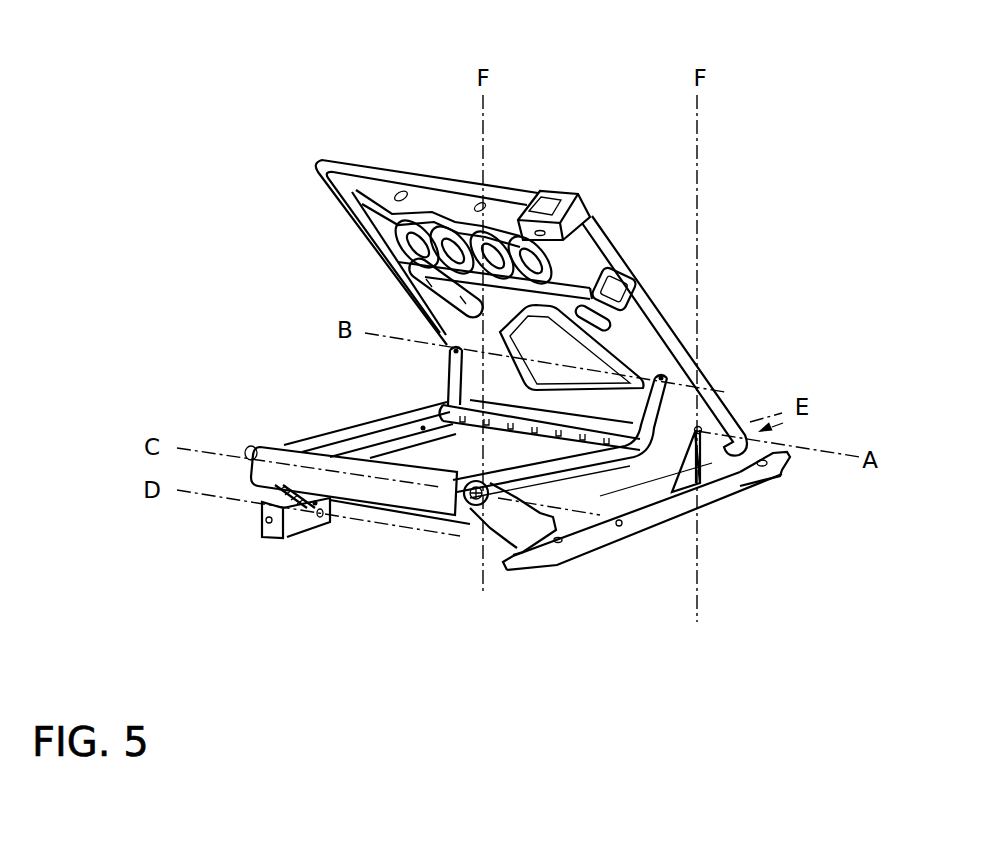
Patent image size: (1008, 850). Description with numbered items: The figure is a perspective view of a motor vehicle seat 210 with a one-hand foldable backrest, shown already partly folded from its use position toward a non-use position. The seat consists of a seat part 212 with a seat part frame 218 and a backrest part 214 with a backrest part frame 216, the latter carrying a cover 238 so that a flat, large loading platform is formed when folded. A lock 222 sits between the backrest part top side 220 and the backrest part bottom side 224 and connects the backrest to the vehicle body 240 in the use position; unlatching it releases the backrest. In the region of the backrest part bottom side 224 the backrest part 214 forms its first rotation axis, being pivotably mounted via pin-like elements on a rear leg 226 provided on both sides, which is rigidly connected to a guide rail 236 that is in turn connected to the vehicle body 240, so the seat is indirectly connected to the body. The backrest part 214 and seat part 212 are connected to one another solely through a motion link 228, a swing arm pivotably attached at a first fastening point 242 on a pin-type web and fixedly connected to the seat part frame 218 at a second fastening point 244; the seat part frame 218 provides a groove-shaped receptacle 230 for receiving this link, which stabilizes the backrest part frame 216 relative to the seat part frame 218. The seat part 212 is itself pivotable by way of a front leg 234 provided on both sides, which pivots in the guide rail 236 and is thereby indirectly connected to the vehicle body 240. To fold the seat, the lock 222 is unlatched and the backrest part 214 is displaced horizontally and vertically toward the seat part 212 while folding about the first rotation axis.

The motor vehicle seat 210 is at (234, 219).
The seat part 212 is at (379, 545).
The backrest part 214 is at (609, 196).
The backrest part frame 216 is at (628, 328).
The seat part frame 218 is at (362, 432).
The backrest part top side 220 is at (410, 111).
The lock 222 is at (628, 262).
The backrest part bottom side 224 is at (747, 442).
The rear leg 226 is at (394, 390).
The motion link 228 is at (633, 445).
The receptacle 230 is at (540, 505).
The front leg 234 is at (316, 504).
The guide rail 236 is at (262, 530).
The cover 238 is at (665, 331).
The vehicle body 240 is at (662, 538).
The first fastening point 242 is at (665, 379).
The second fastening point 244 is at (580, 458).